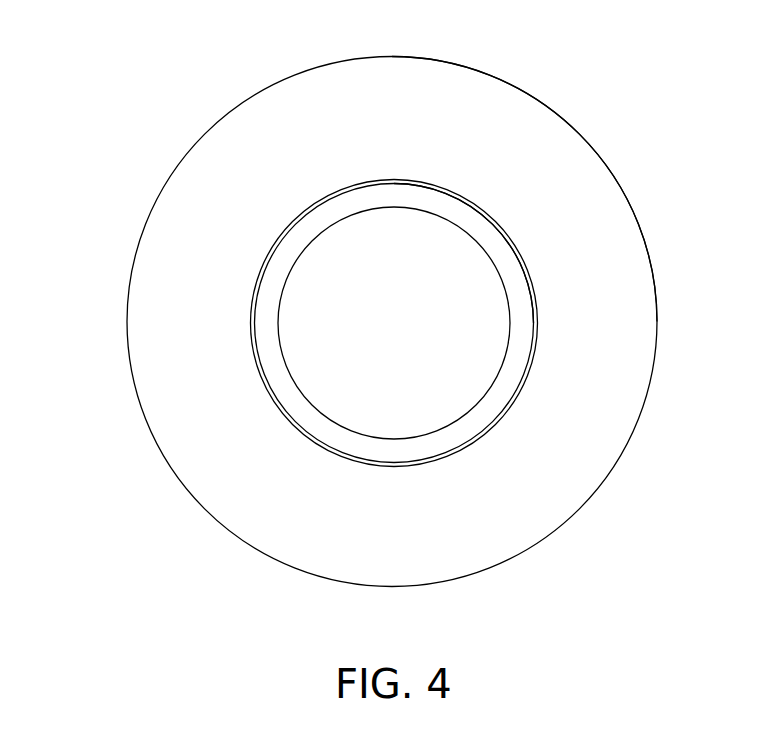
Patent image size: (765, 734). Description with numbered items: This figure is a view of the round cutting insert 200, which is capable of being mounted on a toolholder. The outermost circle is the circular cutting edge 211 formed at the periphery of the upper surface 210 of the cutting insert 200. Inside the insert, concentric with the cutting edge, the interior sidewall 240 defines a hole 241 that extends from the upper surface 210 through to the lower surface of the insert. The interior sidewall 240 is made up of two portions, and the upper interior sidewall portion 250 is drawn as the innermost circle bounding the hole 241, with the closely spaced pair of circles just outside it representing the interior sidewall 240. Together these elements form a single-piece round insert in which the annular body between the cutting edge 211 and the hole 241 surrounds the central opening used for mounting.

The cutting insert 200 is at (90, 56).
The upper surface 210 is at (608, 190).
The circular cutting edge 211 is at (541, 103).
The interior sidewall 240 is at (407, 200).
The hole 241 is at (490, 318).
The upper interior sidewall portion 250 is at (343, 203).